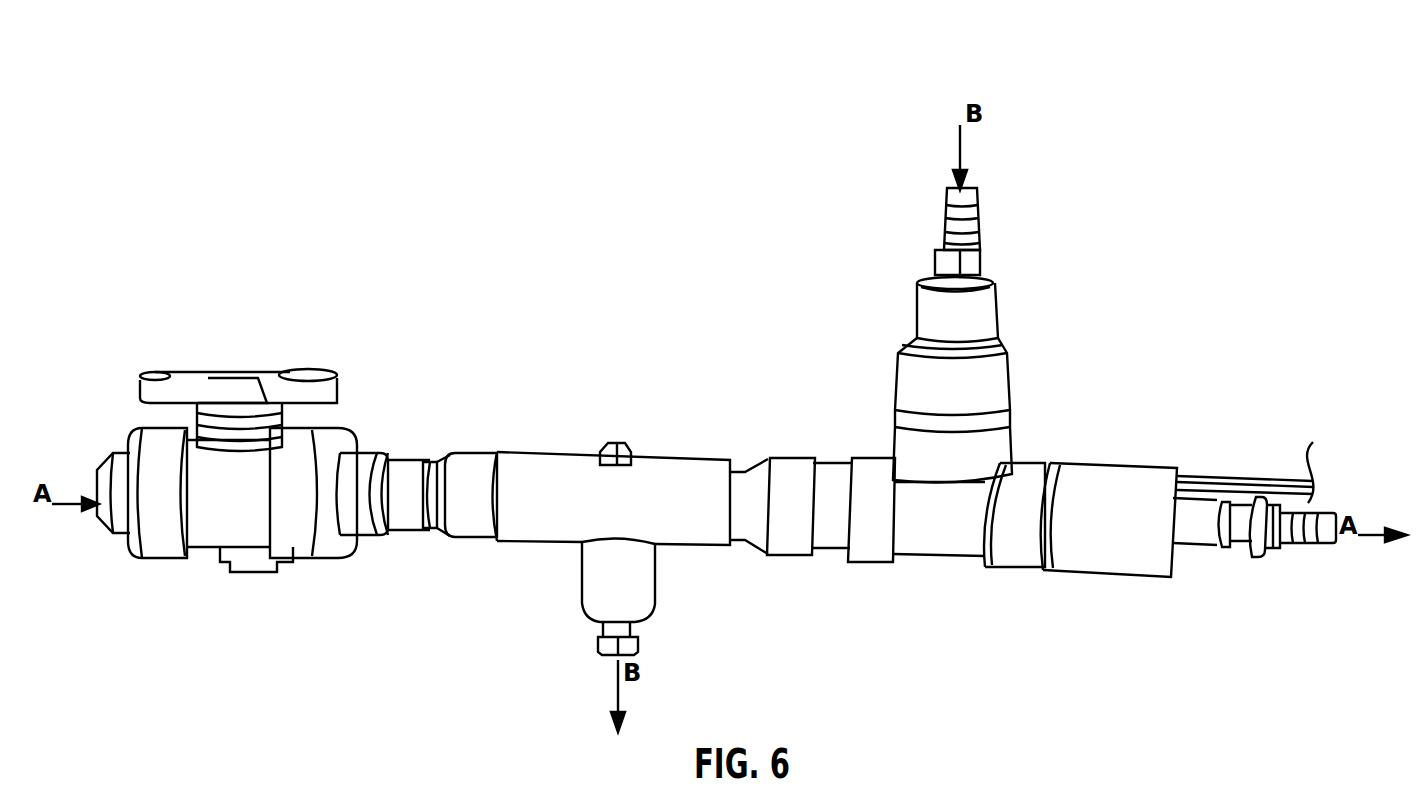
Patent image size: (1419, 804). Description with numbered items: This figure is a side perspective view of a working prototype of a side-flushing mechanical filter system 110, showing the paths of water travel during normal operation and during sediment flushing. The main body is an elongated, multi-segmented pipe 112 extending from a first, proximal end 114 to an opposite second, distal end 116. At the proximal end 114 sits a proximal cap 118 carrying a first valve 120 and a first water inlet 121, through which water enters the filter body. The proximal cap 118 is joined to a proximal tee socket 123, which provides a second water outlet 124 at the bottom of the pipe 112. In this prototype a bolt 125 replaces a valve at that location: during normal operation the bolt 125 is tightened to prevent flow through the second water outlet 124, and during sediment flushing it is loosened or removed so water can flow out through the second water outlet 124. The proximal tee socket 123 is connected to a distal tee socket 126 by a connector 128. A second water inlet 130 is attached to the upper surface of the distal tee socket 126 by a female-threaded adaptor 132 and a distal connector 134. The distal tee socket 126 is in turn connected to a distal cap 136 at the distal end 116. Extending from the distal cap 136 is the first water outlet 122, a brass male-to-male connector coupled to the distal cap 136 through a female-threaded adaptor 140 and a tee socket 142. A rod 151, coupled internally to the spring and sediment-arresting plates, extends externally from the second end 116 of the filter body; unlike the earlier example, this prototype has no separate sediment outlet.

The side-flushing mechanical filter system 110 is at (755, 126).
The pipe 112 is at (704, 343).
The first end 114 is at (142, 586).
The second end 116 is at (1161, 357).
The proximal cap 118 is at (338, 430).
The first valve 120 is at (266, 378).
The inlet 121 is at (97, 468).
The first water outlet 122 is at (1305, 545).
The proximal tee socket 123 is at (508, 453).
The second water outlet 124 is at (573, 607).
The bolt 125 is at (597, 637).
The distal tee socket 126 is at (1000, 460).
The connector 128 is at (750, 460).
The second water inlet 130 is at (966, 184).
The female-threaded adaptor 132 is at (985, 272).
The distal connector 134 is at (997, 345).
The distal cap 136 is at (1105, 465).
The female-threaded adaptor 140 is at (1248, 548).
The tee socket 142 is at (1197, 548).
The rod 151 is at (1225, 478).